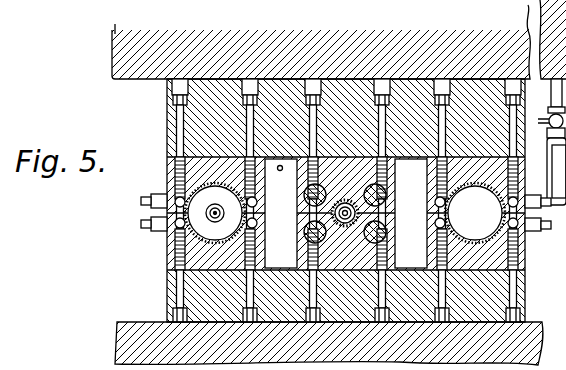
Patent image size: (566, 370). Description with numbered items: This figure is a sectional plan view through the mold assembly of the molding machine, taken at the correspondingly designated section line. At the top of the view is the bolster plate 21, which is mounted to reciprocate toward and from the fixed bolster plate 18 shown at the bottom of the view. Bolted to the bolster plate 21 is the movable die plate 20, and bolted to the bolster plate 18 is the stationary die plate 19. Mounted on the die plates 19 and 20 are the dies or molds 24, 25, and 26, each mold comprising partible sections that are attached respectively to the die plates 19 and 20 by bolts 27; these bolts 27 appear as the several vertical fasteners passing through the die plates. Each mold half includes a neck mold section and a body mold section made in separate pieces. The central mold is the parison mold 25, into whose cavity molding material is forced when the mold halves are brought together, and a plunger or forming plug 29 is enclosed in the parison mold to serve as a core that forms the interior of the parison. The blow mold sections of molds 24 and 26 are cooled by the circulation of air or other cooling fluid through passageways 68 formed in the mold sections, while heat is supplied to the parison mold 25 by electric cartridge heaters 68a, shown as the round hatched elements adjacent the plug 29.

The bolster plate 18 is at (530, 330).
The stationary die plate 19 is at (167, 292).
The movable die plate 20 is at (167, 108).
The bolster plate 21 is at (113, 63).
The die or mold 24 is at (525, 257).
The parison mold 25 is at (387, 247).
The die or mold 26 is at (167, 247).
The bolts 27 is at (250, 124).
The plungers or forming plugs 29 is at (210, 208).
The passageways 68 is at (176, 199).
The electric cartridge heaters 68a is at (305, 222).